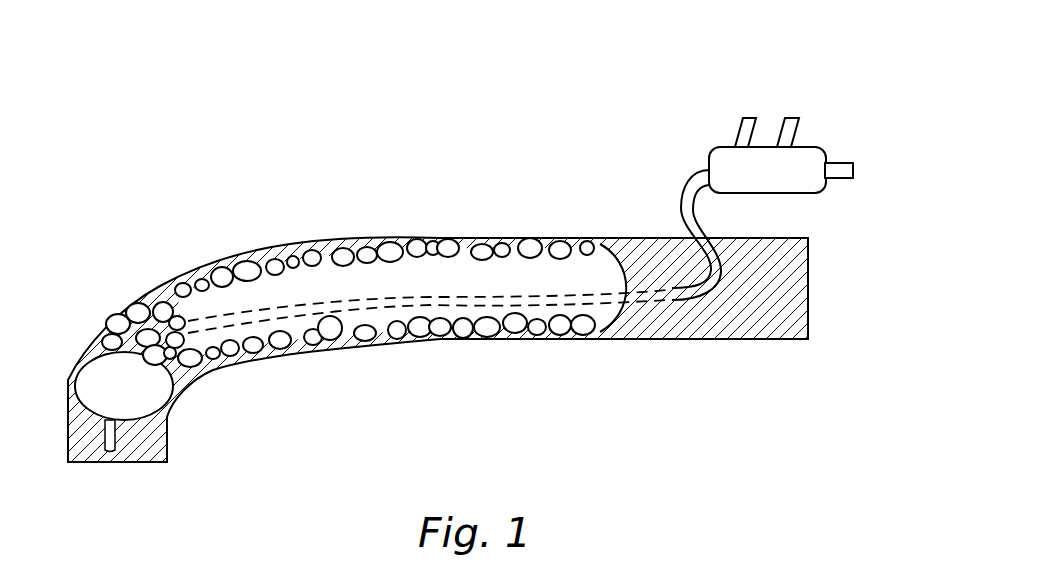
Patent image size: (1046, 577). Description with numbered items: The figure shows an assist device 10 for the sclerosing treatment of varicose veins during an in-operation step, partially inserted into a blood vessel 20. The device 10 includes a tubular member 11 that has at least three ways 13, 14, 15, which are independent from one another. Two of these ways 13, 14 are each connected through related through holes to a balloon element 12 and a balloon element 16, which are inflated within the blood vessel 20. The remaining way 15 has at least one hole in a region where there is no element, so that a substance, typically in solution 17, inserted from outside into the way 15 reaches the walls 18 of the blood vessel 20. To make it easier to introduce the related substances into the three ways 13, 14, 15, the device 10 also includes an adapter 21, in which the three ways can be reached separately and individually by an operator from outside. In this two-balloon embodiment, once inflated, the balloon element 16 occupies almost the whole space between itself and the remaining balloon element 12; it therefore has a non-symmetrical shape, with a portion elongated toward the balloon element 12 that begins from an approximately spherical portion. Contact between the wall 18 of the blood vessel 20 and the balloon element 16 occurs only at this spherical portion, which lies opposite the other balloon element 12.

The assist device 10 is at (416, 288).
The tubular member 11 is at (685, 190).
The balloon element 12 is at (95, 377).
The way 13 is at (748, 117).
The way 14 is at (792, 118).
The way 15 is at (836, 162).
The balloon element 16 is at (452, 277).
The substance in solution 17 is at (218, 275).
The wall of the blood vessel 18 is at (283, 252).
The blood vessel 20 is at (681, 347).
The adapter 21 is at (722, 162).